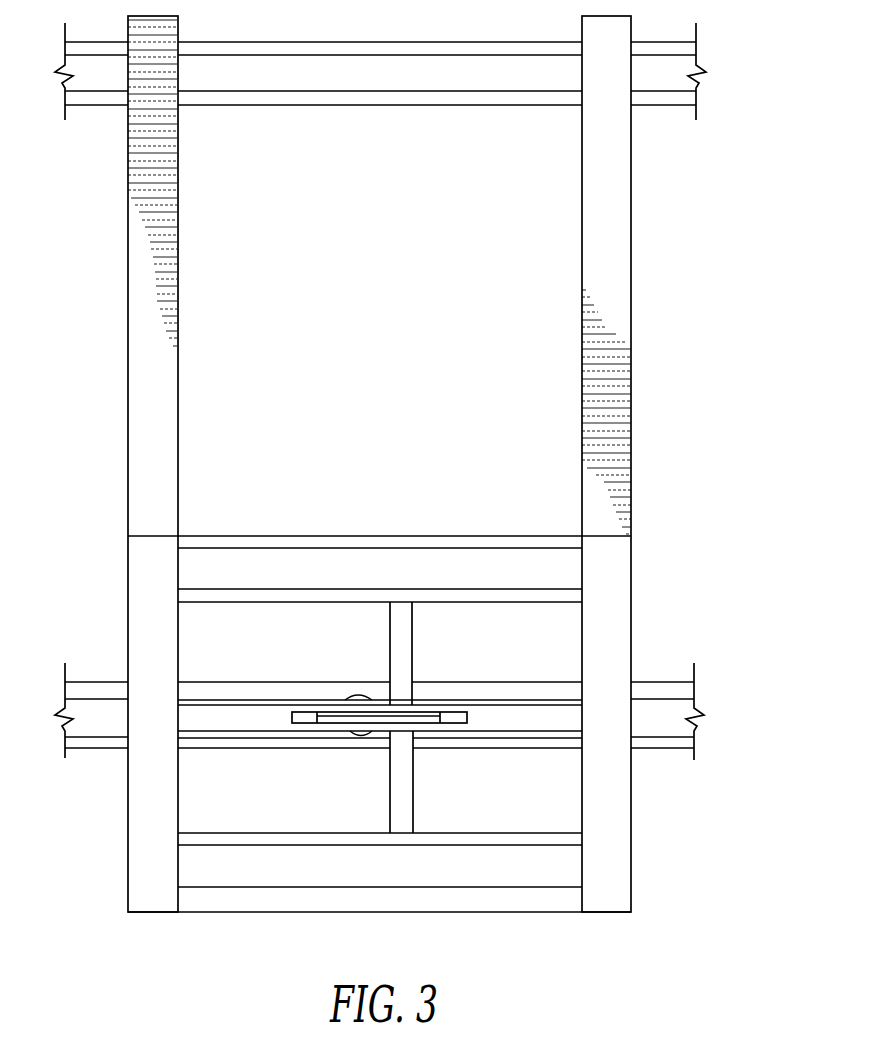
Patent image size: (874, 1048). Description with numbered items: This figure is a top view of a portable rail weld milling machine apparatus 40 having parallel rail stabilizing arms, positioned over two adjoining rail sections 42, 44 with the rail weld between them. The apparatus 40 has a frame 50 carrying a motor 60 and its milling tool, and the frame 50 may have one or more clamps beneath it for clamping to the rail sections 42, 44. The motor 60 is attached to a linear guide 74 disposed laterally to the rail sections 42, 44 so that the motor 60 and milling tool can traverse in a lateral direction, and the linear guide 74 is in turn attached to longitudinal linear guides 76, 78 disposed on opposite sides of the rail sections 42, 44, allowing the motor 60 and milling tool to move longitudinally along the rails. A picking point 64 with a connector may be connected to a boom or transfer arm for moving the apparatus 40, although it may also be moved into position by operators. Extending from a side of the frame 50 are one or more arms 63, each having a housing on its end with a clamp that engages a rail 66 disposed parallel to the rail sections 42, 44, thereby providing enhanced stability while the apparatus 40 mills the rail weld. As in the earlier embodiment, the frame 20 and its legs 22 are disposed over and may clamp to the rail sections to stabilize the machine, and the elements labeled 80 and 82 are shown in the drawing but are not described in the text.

The frame 20 is at (603, 885).
The legs 22 is at (152, 887).
The portable rail weld milling machine apparatus 40 is at (703, 355).
The rail section 42 is at (110, 715).
The rail section 44 is at (658, 717).
The frame 50 is at (606, 619).
The motor 60 is at (358, 700).
The arms 63 is at (153, 358).
The picking point 64 is at (450, 717).
The rail 66 is at (653, 80).
The linear guide 74 is at (397, 642).
The longitudinal linear guide 76 is at (540, 597).
The longitudinal linear guide 78 is at (532, 840).
The top plate 80 is at (210, 543).
The bottom plate 82 is at (283, 897).